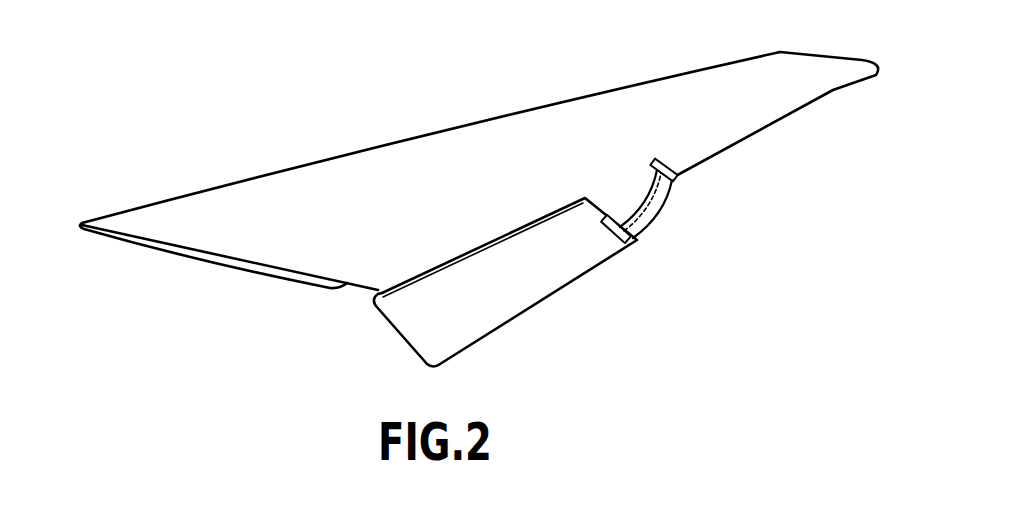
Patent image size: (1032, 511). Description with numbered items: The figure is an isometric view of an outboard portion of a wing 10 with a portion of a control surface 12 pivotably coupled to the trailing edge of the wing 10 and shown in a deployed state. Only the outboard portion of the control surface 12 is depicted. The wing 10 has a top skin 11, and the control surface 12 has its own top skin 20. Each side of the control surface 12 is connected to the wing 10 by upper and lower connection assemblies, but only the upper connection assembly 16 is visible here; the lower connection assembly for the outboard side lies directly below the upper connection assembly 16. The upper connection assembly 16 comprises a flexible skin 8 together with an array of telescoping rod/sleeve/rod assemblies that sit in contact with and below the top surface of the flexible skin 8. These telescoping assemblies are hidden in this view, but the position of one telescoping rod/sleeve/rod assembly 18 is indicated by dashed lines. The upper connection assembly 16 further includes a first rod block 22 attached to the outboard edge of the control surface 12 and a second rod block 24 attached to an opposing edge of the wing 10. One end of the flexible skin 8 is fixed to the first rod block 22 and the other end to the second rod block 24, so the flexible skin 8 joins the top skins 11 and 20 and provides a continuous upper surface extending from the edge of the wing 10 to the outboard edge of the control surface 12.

The wing 10 is at (479, 171).
The top skin 11 is at (403, 173).
The control surface 12 is at (482, 288).
The top skin 20 is at (430, 316).
The flexible skin 8 is at (689, 224).
The upper connection assembly 16 is at (673, 215).
The telescoping rod/sleeve/rod assembly 18 is at (662, 187).
The first rod block 22 is at (666, 162).
The second rod block 24 is at (614, 227).